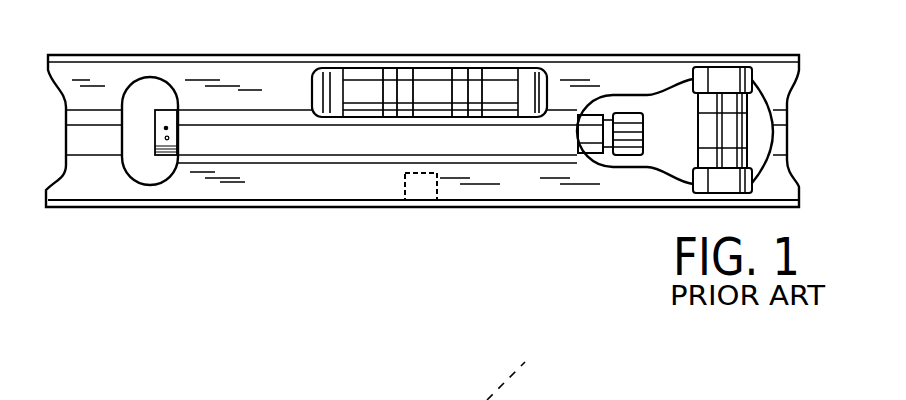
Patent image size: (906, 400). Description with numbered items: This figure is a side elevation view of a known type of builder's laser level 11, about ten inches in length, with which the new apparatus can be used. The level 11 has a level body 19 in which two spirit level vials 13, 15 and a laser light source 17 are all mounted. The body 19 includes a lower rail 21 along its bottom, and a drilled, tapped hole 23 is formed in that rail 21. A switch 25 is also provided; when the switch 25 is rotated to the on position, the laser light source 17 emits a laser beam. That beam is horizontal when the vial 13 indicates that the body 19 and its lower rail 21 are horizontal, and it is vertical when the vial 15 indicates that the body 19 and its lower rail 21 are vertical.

The level 11 is at (265, 72).
The spirit level vial 13 is at (495, 80).
The spirit level vial 15 is at (737, 132).
The laser light source 17 is at (163, 112).
The level body 19 is at (630, 83).
The lower rail 21 is at (232, 203).
The drilled, tapped hole 23 is at (417, 207).
The switch 25 is at (628, 147).